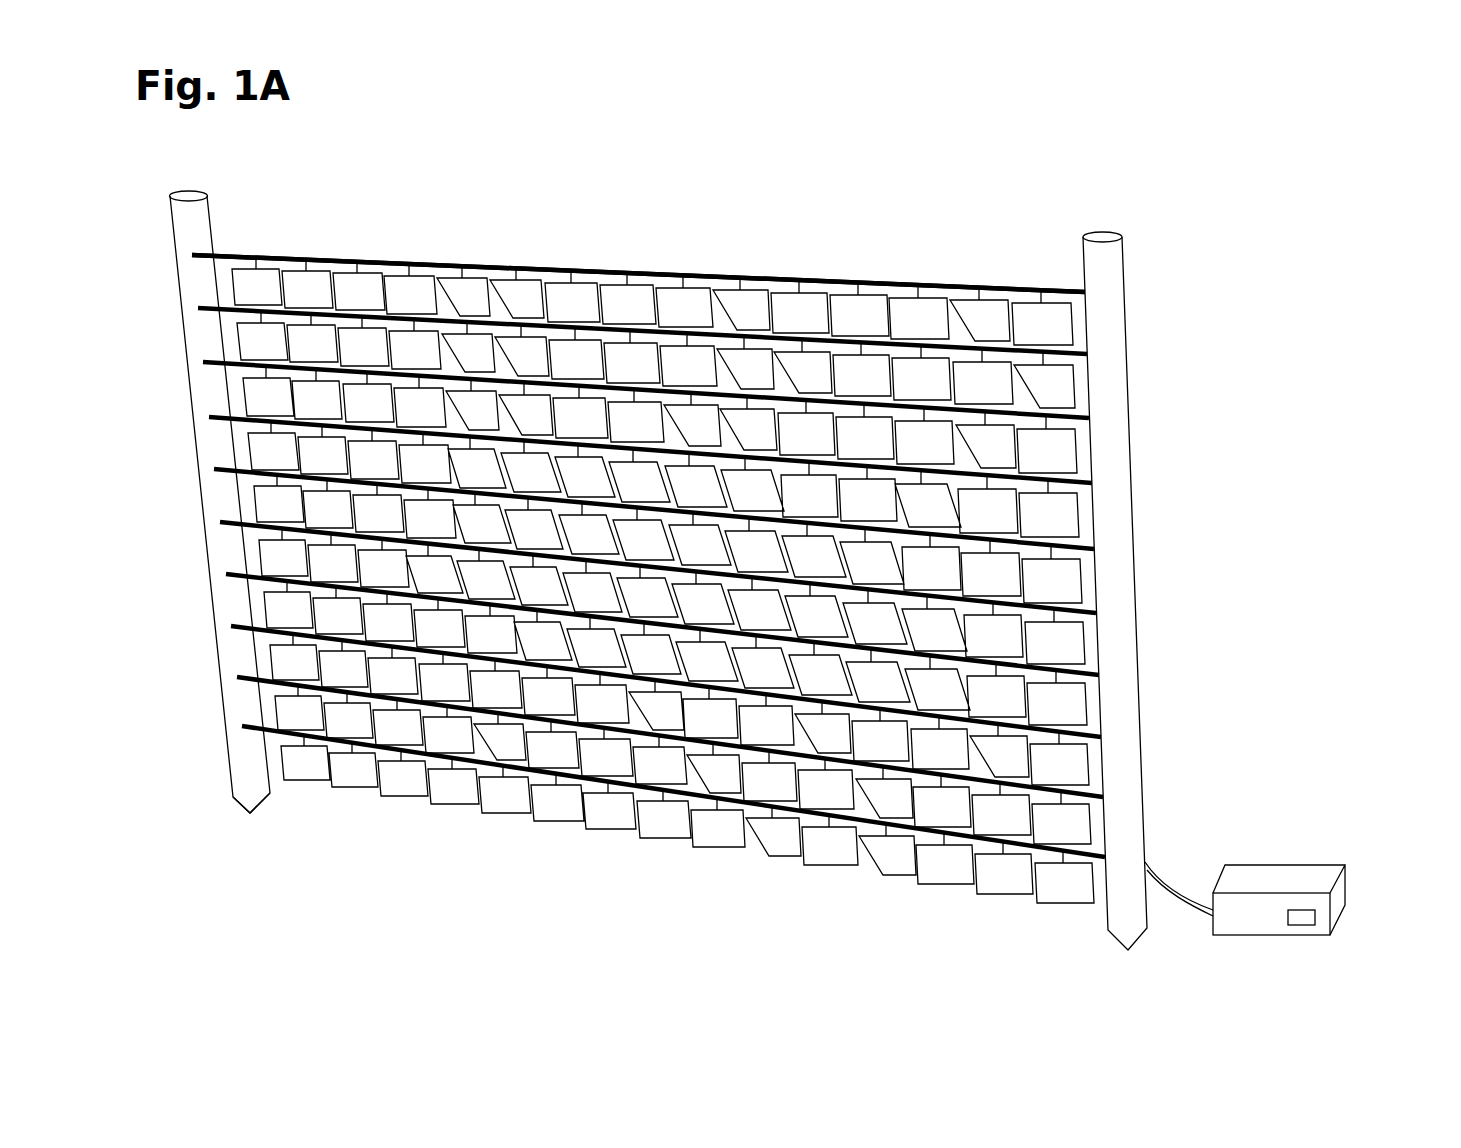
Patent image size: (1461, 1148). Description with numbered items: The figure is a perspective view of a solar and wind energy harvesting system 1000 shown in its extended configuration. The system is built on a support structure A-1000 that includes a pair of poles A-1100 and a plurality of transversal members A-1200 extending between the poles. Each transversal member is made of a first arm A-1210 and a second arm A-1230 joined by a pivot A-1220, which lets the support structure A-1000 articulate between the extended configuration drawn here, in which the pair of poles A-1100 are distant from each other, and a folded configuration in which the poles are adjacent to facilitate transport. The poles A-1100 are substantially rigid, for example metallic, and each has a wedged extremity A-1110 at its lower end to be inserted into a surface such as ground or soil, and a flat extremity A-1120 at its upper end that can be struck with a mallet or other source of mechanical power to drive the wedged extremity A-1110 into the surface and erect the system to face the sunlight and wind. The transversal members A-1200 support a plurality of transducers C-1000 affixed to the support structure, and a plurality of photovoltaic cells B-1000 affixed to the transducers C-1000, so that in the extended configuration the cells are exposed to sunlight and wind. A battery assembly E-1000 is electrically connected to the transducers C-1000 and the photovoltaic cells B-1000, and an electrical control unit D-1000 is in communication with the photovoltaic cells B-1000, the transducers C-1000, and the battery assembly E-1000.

The solar and wind energy harvesting system 1000 is at (1272, 186).
The support structure A-1000 is at (1165, 346).
The pair of poles A-1100 is at (213, 630).
The wedged extremity A-1110 is at (258, 812).
The flat extremity A-1120 is at (192, 194).
The plurality of transversal members A-1200 is at (312, 456).
The first arm A-1210 is at (487, 267).
The pivot A-1220 is at (652, 388).
The second arm A-1230 is at (898, 292).
The plurality of photovoltaic cells B-1000 is at (1077, 578).
The plurality of transducers C-1000 is at (1090, 792).
The electrical control unit D-1000 is at (1315, 918).
The battery assembly E-1000 is at (1330, 826).